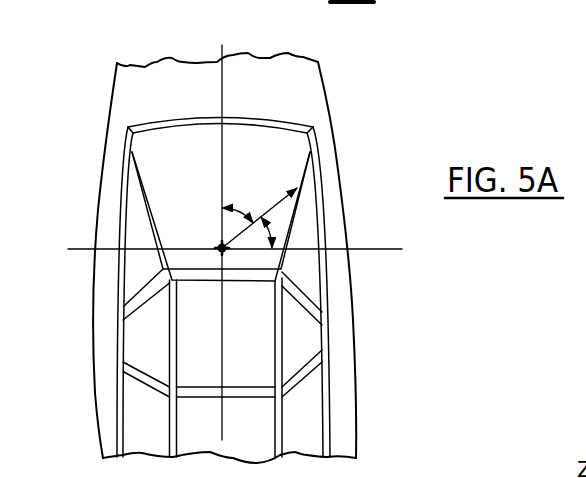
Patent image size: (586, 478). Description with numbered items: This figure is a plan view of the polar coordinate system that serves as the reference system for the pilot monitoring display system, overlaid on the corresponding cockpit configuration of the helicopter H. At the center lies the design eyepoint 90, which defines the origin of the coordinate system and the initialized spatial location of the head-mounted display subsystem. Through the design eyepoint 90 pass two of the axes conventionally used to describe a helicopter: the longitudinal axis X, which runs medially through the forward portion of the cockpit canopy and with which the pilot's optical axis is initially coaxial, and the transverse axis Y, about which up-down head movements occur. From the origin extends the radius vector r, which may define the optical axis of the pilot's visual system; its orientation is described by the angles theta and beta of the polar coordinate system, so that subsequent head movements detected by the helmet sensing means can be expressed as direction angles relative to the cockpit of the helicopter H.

The design eyepoint 90 is at (222, 248).
The helicopter H is at (94, 394).
The longitudinal axis X— X is at (234, 235).
The transverse axis Y— Y is at (230, 249).
The radius vector r is at (282, 202).